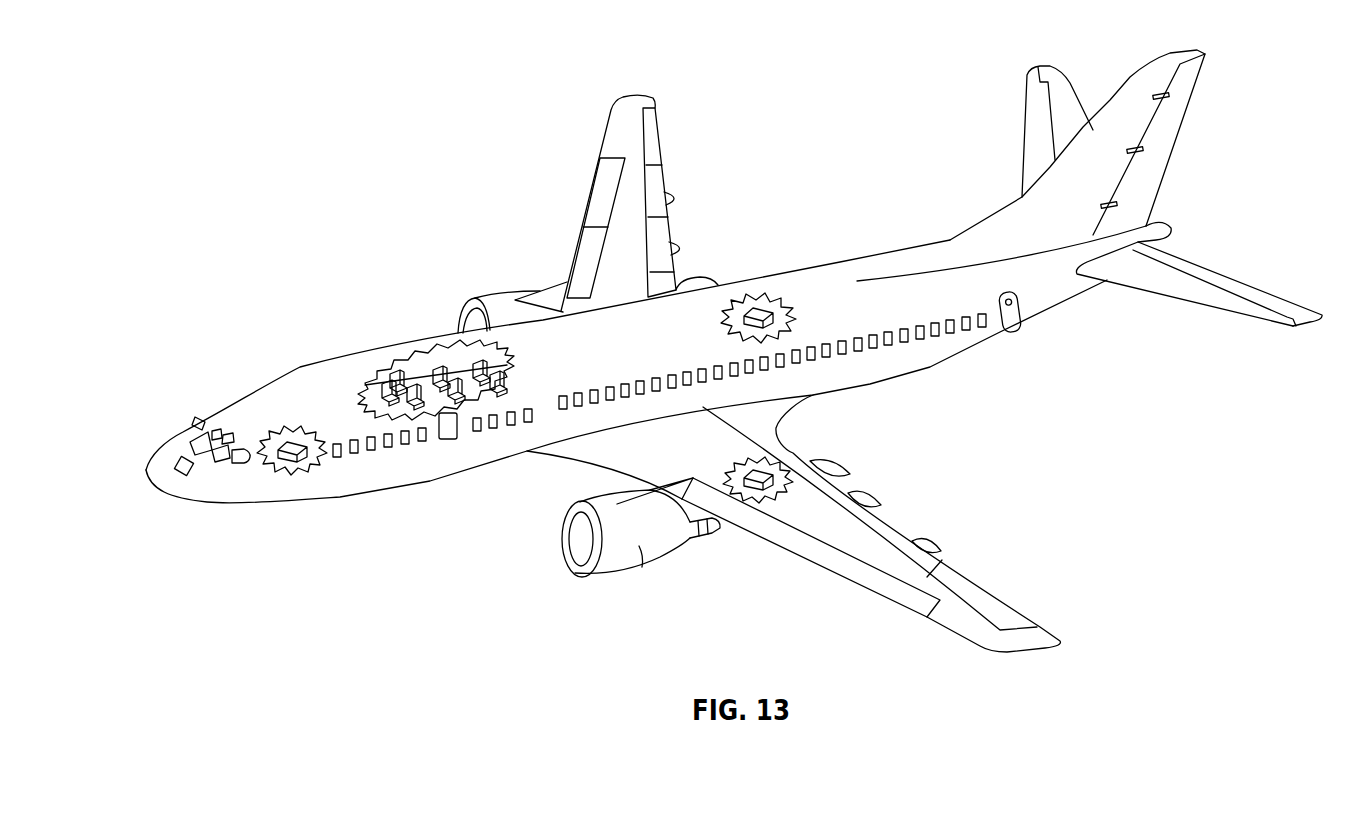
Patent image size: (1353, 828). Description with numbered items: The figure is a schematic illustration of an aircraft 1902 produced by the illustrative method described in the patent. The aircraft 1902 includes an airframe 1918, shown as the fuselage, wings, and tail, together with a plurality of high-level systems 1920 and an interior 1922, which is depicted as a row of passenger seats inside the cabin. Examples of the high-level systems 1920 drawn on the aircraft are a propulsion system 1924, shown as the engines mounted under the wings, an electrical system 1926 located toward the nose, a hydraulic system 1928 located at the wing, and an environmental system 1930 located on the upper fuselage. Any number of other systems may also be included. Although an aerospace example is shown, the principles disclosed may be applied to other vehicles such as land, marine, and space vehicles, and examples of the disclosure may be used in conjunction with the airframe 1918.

The aircraft 1902 is at (258, 232).
The airframe 1918 is at (388, 340).
The high-level systems 1920 is at (1092, 480).
The interior 1922 is at (420, 398).
The propulsion system 1924 is at (499, 300).
The electrical system 1926 is at (292, 445).
The hydraulic system 1928 is at (758, 474).
The environmental system 1930 is at (751, 315).